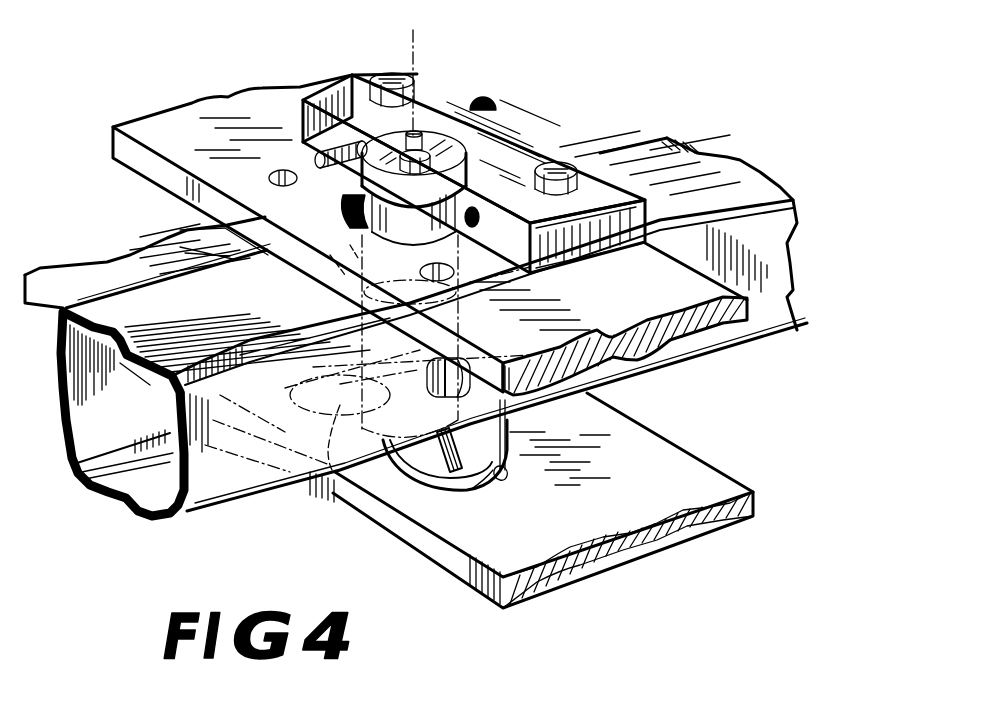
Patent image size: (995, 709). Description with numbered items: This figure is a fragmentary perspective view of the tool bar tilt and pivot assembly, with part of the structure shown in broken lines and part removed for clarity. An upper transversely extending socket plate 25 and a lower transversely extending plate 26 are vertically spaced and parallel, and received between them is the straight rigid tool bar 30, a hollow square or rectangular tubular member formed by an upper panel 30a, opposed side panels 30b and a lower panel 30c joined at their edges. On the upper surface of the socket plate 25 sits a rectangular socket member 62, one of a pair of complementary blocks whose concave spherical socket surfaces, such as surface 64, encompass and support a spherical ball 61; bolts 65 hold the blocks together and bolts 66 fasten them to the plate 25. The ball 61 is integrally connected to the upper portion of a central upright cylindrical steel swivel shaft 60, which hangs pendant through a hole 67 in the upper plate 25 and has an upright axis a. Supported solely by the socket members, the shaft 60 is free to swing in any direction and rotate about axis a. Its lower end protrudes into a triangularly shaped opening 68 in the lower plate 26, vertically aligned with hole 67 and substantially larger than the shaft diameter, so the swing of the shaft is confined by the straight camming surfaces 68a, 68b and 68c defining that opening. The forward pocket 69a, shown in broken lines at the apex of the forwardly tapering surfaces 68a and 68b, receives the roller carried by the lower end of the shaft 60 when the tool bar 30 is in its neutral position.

The upper transversely extending socket plate 25 is at (168, 123).
The lower transversely extending plate 26 is at (667, 450).
The tool bar 30 is at (635, 160).
The upper panel 30a is at (717, 168).
The side panels 30b is at (780, 290).
The lower panel 30c is at (133, 515).
The swivel shaft 60 is at (330, 284).
The spherical ball 61 is at (347, 196).
The socket member 62 is at (517, 127).
The socket surface 64 is at (460, 180).
The bolts 65 is at (314, 158).
The bolts 66 is at (386, 68).
The hole 67 is at (353, 236).
The triangularly-shaped hole or opening 68 is at (452, 485).
The camming surface 68a is at (333, 490).
The camming surface 68b is at (505, 480).
The camming surface 68c is at (297, 420).
The forward pocket 69a is at (473, 351).
The axis a is at (418, 42).